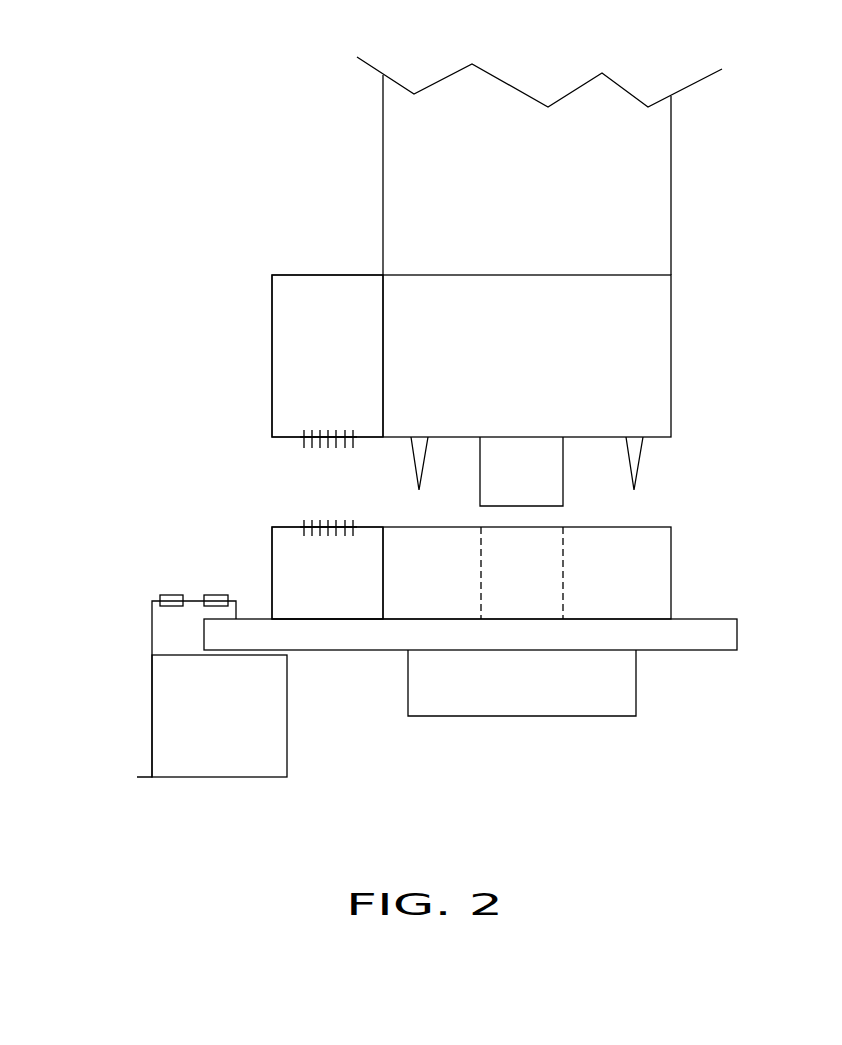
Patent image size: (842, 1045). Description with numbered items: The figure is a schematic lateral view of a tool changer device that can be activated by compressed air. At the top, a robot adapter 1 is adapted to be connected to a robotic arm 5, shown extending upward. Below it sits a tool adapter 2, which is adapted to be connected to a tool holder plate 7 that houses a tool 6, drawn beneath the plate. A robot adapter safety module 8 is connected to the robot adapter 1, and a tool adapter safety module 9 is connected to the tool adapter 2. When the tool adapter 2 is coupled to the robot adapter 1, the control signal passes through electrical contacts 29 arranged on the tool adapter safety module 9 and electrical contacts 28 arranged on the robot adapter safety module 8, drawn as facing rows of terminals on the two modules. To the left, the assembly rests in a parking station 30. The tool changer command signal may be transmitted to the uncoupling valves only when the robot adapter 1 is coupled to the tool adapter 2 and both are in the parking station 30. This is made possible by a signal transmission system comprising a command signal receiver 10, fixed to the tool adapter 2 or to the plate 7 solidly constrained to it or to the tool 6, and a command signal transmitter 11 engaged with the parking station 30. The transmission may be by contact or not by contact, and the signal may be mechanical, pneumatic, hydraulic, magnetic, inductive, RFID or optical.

The robot adapter 1 is at (659, 389).
The tool adapter 2 is at (650, 560).
The robotic arm 5 is at (655, 246).
The tool 6 is at (623, 697).
The tool holder plate 7 is at (722, 640).
The robot adapter safety module 8 is at (292, 293).
The tool adapter safety module 9 is at (343, 603).
The command signal receiver 10 is at (220, 600).
The command signal transmitter 11 is at (173, 603).
The electrical contacts 28 is at (318, 464).
The electrical contacts 29 is at (327, 514).
The parking station 30 is at (162, 728).